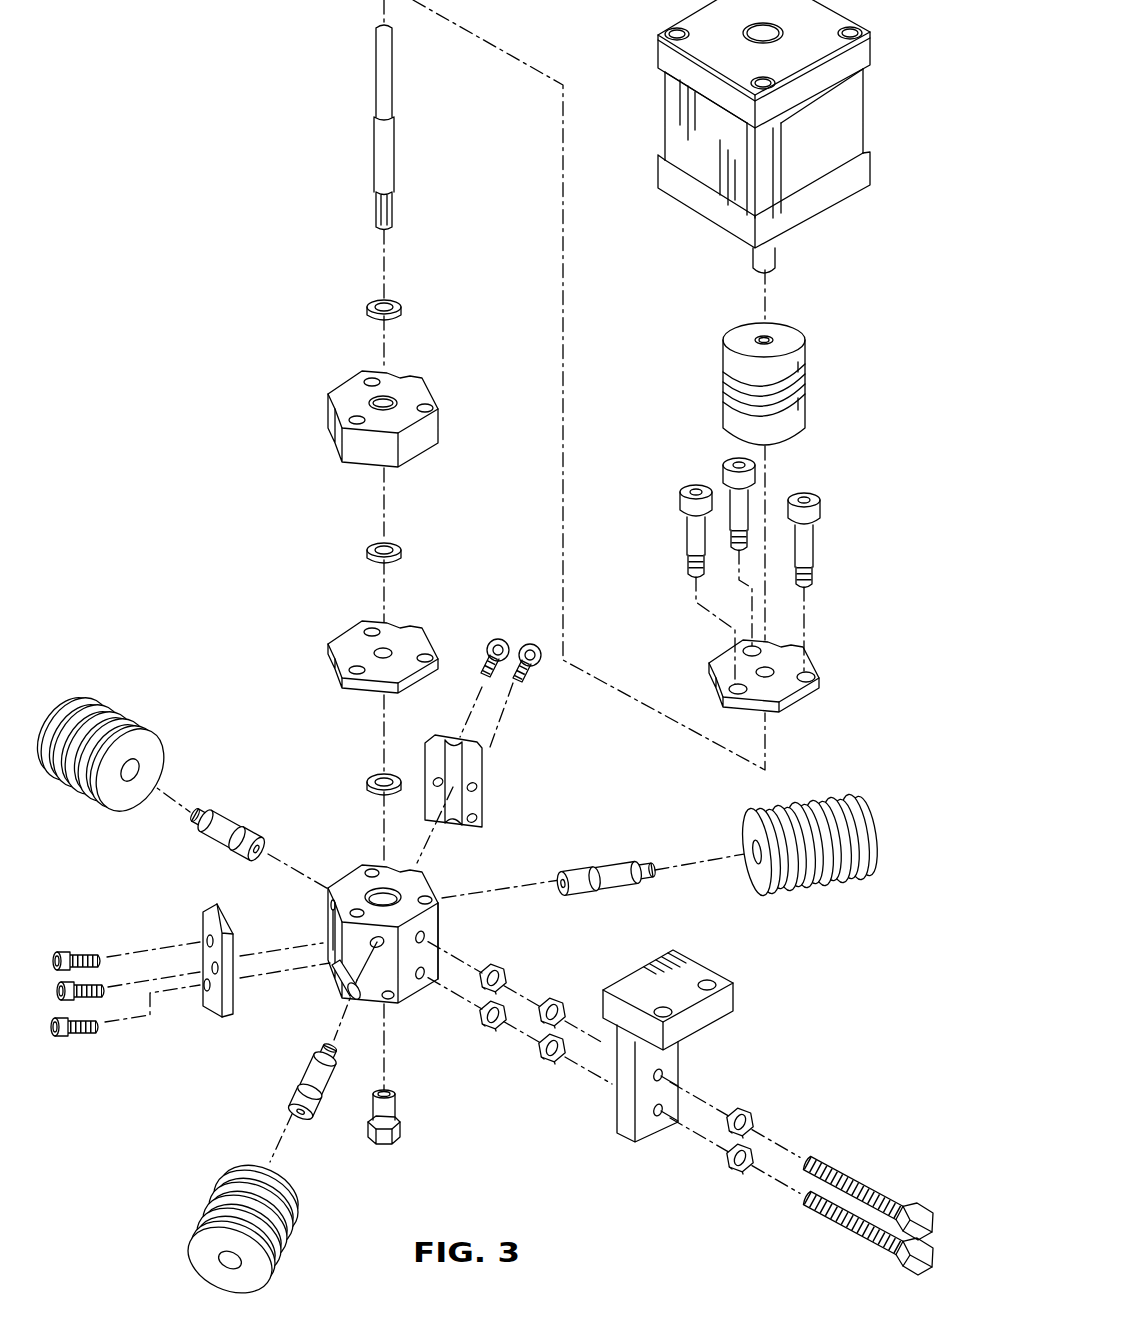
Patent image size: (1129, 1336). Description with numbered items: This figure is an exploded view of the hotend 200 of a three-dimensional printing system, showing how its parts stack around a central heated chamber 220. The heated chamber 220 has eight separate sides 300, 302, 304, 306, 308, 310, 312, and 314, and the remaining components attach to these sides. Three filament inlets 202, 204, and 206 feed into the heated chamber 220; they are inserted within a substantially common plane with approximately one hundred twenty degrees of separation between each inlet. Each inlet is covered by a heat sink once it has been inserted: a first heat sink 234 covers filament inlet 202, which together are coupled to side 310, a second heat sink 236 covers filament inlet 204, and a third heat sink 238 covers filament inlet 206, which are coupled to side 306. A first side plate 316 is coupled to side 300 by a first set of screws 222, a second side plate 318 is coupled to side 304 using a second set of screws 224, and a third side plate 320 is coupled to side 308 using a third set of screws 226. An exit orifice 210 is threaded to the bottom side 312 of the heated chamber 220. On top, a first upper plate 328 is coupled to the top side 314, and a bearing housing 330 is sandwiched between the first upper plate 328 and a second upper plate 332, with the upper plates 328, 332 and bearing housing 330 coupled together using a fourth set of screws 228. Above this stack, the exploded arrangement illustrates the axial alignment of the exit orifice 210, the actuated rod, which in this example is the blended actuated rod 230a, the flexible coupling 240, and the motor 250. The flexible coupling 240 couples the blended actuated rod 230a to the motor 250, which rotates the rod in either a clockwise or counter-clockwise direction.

The hotend 200 is at (195, 166).
The filament inlet 202 is at (253, 792).
The filament inlet 204 is at (293, 1082).
The filament inlet 206 is at (612, 895).
The exit orifice 210 is at (401, 1128).
The heated chamber 220 is at (432, 893).
The first set of screws 222 is at (84, 950).
The second set of screws 224 is at (876, 1183).
The third set of screws 226 is at (497, 637).
The fourth set of screws 228 is at (822, 560).
The blended actuated rod 230a is at (375, 155).
The first heat sink 234 is at (818, 893).
The second heat sink 236 is at (113, 703).
The third heat sink 238 is at (204, 1212).
The flexible coupling 240 is at (807, 393).
The motor 250 is at (873, 126).
The side 300 is at (362, 940).
The side 302 is at (342, 967).
The side 304 is at (412, 990).
The side 306 is at (446, 920).
The side 308 is at (378, 868).
The side 310 is at (300, 890).
The bottom side 312 is at (355, 1012).
The top side 314 is at (352, 882).
The first side plate 316 is at (201, 925).
The second side plate 318 is at (624, 1140).
The third side plate 320 is at (485, 787).
The first upper plate 328 is at (347, 630).
The bearing housing 330 is at (330, 405).
The second upper plate 332 is at (805, 705).